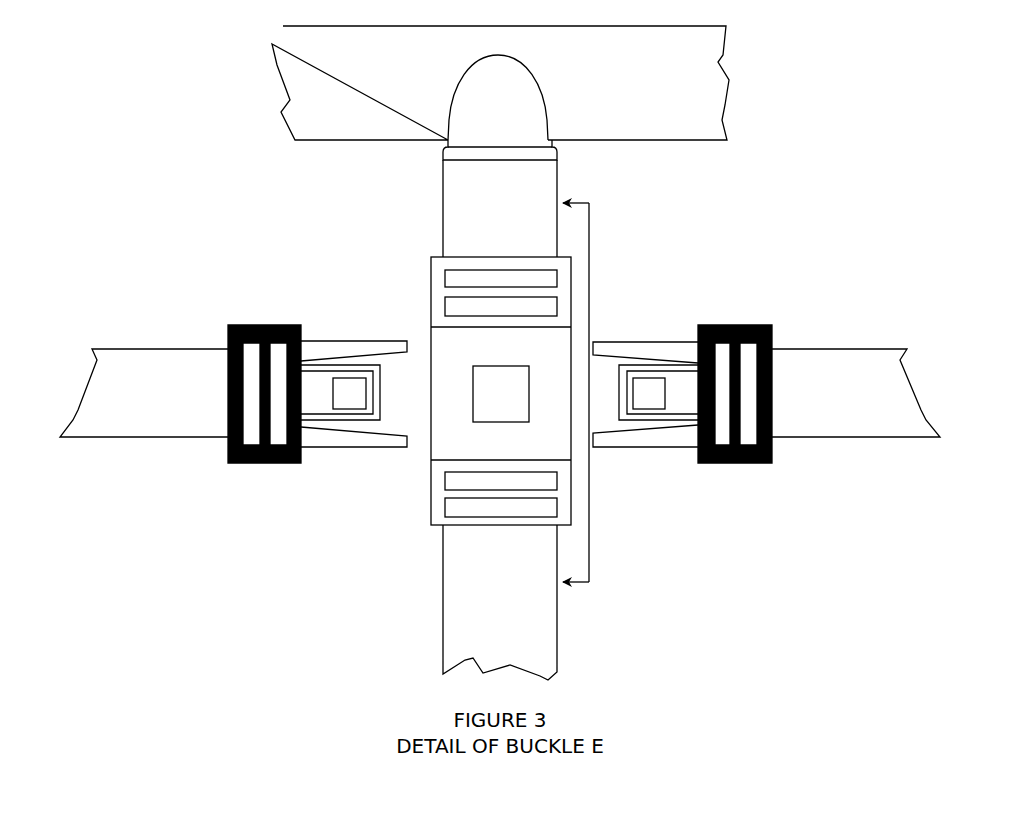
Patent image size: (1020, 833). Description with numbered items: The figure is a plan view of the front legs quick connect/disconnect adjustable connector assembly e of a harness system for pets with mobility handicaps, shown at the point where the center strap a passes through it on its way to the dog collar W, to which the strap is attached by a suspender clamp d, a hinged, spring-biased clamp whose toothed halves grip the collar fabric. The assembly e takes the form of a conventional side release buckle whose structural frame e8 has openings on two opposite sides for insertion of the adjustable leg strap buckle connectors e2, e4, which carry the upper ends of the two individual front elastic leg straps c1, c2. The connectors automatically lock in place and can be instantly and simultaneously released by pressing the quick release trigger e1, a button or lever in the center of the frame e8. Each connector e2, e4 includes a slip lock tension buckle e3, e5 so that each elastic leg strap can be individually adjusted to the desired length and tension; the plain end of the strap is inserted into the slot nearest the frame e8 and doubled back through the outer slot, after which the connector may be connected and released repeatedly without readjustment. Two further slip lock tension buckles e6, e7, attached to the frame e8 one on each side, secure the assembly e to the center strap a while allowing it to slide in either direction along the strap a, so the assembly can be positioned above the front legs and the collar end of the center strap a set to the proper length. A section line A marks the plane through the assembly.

The dog collar W is at (500, 83).
The suspender clamp d is at (500, 107).
The center strap a is at (500, 420).
The front legs quick connect/disconnect adjustable connector assembly e is at (602, 312).
The quick release trigger e1 is at (501, 394).
The adjustable leg strap buckle connector e2 is at (650, 336).
The slip lock tension buckle e3 is at (735, 323).
The adjustable leg strap buckle connector e4 is at (358, 336).
The slip lock tension buckle e5 is at (265, 322).
The slip lock tension buckle e6 is at (421, 490).
The slip lock tension buckle e7 is at (421, 287).
The structural frame e8 is at (501, 393).
The front elastic leg strap c1 is at (144, 393).
The front elastic leg strap c2 is at (856, 393).
The section line A is at (590, 392).